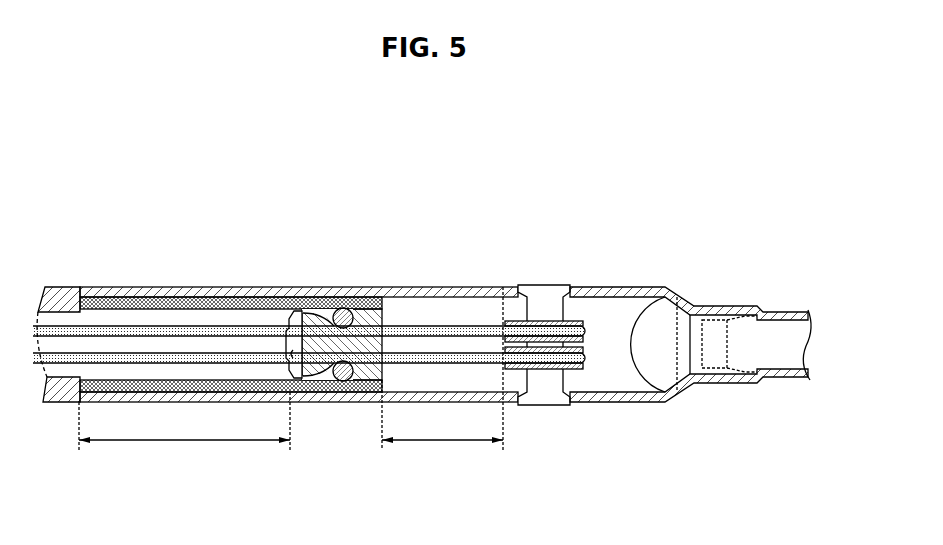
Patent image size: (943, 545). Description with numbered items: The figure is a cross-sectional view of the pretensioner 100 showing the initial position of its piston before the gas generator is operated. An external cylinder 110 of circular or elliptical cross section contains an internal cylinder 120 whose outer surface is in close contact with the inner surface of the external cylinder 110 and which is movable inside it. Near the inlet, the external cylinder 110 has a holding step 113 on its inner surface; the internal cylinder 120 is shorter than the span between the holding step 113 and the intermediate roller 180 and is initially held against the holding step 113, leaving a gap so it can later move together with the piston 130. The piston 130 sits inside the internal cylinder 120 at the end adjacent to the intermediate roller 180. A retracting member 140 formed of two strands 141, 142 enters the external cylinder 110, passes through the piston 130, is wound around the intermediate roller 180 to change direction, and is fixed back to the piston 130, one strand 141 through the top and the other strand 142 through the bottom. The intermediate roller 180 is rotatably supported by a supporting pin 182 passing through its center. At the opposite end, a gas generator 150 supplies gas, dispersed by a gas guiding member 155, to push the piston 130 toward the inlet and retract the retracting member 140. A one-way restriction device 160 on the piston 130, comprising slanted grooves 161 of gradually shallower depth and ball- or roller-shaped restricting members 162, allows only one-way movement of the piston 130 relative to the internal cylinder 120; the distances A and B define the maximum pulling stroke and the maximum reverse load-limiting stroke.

The pretensioner 100 is at (532, 206).
The external cylinder 110 is at (223, 288).
The holding step 113 is at (97, 288).
The internal cylinder 120 is at (153, 288).
The piston 130 is at (342, 377).
The retracting member 140 is at (309, 279).
The one strand of the retracting member 141 is at (425, 328).
The other strand of the retracting member 142 is at (474, 353).
The gas generator 150 is at (770, 366).
The gas guiding member 155 is at (657, 305).
The one-way restriction device 160 is at (334, 414).
The slanted groove 161 is at (322, 393).
The restricting member 162 is at (343, 393).
The intermediate roller 180 is at (690, 345).
The supporting pin 182 is at (572, 287).